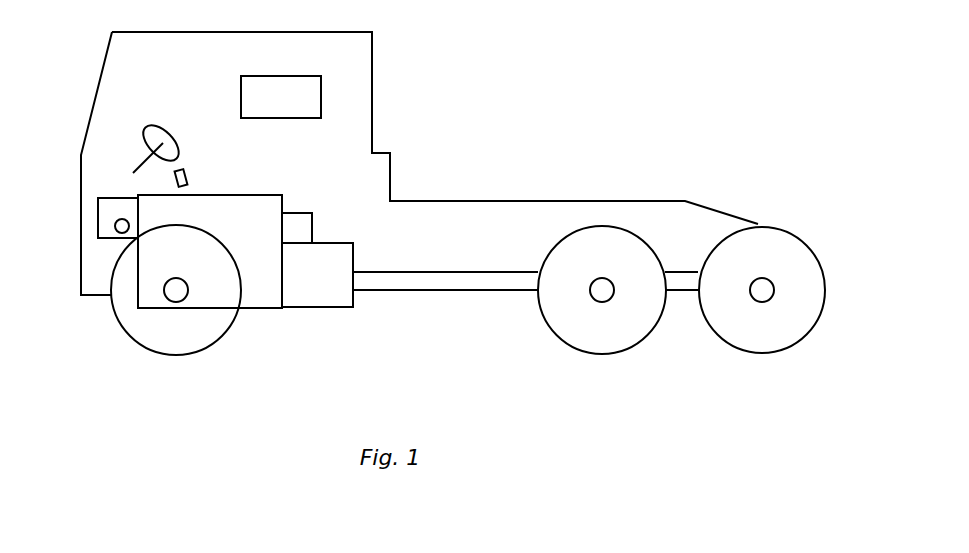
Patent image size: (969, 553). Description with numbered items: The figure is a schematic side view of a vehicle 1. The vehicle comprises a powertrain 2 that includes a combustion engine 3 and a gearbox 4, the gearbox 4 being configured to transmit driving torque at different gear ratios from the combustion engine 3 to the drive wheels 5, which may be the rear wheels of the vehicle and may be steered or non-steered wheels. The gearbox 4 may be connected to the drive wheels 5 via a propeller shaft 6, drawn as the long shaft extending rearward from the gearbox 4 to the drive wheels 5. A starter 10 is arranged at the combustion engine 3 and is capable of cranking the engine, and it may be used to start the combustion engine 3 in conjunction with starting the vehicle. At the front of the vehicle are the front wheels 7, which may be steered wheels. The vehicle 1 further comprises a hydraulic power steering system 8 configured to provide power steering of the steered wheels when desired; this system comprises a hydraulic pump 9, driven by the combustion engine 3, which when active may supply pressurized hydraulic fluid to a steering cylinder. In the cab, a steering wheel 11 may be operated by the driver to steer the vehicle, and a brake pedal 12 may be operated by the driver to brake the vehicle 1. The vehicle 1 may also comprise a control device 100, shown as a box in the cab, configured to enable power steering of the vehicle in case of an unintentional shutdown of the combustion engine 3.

The vehicle 1 is at (546, 90).
The powertrain 2 is at (343, 351).
The combustion engine 3 is at (230, 198).
The gearbox 4 is at (328, 262).
The drive wheels 5 is at (622, 337).
The propeller shaft 6 is at (467, 282).
The front wheels 7 is at (152, 337).
The hydraulic power steering system 8 is at (97, 200).
The hydraulic pump 9 is at (113, 223).
The starter 10 is at (293, 228).
The steering wheel 11 is at (147, 113).
The brake pedal 12 is at (187, 170).
The control device 100 is at (281, 97).